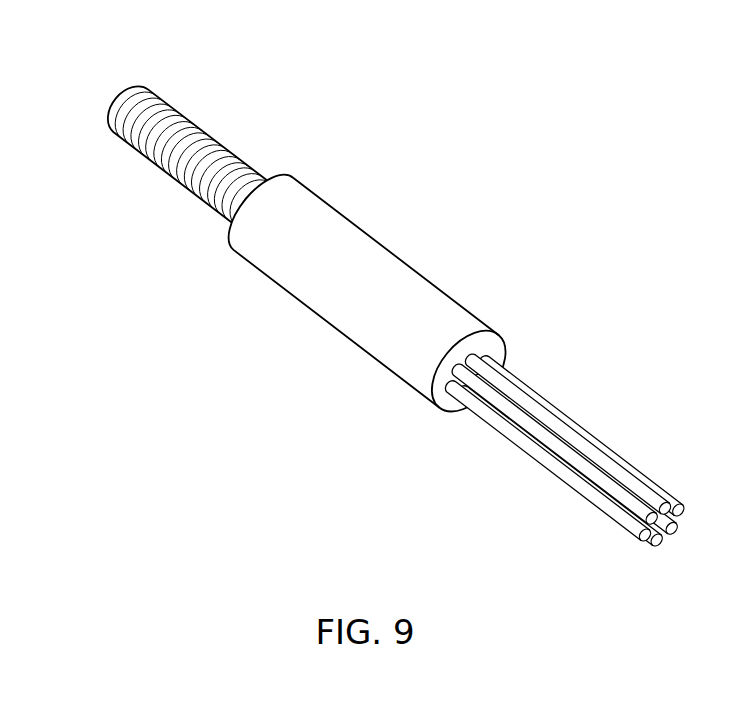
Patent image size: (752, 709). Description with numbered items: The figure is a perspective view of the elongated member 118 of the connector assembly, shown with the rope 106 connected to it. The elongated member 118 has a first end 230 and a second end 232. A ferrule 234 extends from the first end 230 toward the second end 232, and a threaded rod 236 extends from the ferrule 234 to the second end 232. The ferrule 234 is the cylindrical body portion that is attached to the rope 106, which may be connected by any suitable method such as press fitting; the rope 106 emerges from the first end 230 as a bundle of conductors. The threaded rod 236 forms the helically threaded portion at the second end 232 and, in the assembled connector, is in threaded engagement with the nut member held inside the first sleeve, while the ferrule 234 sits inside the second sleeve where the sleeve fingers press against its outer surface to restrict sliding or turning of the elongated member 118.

The rope 106 is at (507, 440).
The elongated member 118 is at (364, 282).
The first end 230 is at (493, 341).
The second end 232 is at (121, 93).
The ferrule 234 is at (307, 283).
The threaded rod 236 is at (158, 147).